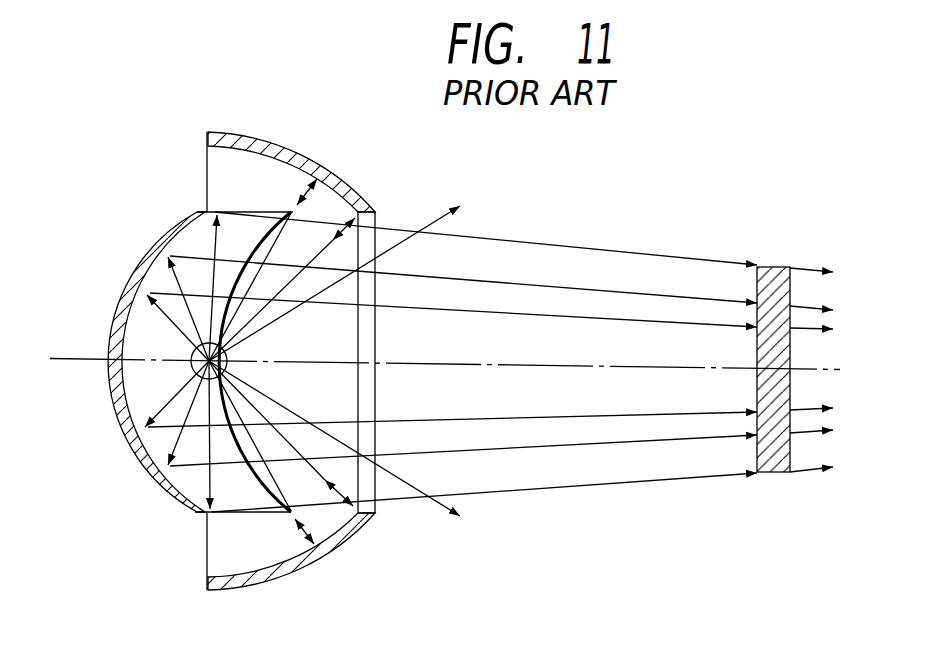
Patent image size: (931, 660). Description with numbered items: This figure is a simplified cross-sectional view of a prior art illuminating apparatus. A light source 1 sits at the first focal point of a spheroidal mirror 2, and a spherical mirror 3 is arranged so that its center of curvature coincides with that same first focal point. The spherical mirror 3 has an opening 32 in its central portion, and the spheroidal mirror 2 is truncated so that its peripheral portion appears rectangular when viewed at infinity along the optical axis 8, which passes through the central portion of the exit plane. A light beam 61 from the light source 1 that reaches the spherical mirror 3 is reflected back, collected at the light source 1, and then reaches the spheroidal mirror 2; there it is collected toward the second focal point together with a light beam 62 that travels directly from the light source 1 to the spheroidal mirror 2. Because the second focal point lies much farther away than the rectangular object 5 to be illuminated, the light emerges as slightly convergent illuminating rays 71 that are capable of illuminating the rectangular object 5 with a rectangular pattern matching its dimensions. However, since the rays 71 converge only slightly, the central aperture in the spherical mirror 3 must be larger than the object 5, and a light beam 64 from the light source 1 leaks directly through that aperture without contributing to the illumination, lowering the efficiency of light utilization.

The light source 1 is at (193, 354).
The spheroidal mirror 2 is at (118, 397).
The spherical mirror 3 is at (253, 582).
The opening 32 is at (206, 170).
The rectangular object 5 is at (775, 266).
The optical axis 8 is at (824, 367).
The light beam 61 is at (338, 220).
The light beam 62 is at (172, 275).
The light beam 64 is at (433, 220).
The illuminating rays 71 is at (617, 512).